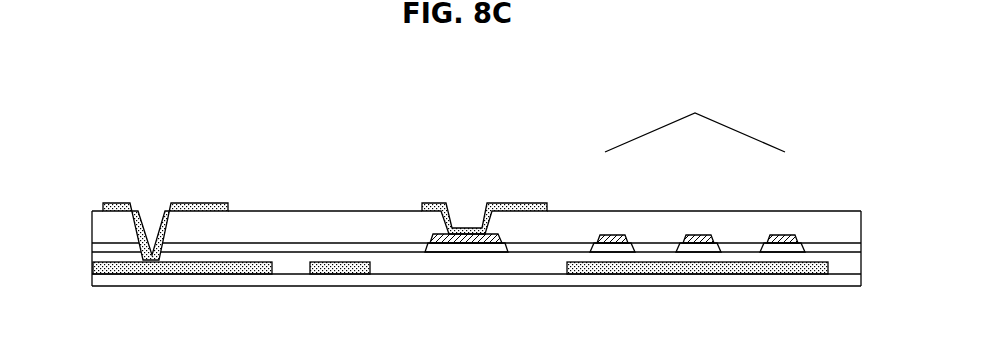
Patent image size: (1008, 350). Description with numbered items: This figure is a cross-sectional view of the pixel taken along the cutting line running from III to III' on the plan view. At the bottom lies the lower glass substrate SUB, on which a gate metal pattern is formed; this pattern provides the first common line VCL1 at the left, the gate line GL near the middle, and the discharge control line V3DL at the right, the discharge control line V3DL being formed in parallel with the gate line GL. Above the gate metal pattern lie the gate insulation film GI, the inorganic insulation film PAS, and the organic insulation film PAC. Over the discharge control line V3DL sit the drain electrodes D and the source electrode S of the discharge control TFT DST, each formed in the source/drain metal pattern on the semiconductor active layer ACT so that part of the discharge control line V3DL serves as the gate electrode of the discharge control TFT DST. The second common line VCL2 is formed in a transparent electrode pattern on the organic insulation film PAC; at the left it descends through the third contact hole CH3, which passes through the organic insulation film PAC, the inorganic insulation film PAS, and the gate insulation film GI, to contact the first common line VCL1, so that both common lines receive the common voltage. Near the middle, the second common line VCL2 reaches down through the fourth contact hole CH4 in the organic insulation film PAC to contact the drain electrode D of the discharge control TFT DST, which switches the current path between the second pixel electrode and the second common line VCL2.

The organic insulation film PAC is at (92, 220).
The inorganic insulation film PAS is at (92, 243).
The gate insulation film GI is at (92, 252).
The lower glass substrate SUB is at (92, 280).
The first common line VCL1 is at (206, 274).
The gate line GL is at (343, 274).
The discharge control line V3DL is at (693, 274).
The second common line VCL2 is at (210, 203).
The third contact hole CH3 is at (152, 200).
The fourth contact hole CH4 is at (467, 204).
The drain electrode D is at (612, 235).
The source electrode S is at (698, 235).
The semiconductor active layer ACT is at (488, 252).
The discharge control TFT DST is at (695, 123).
The section line III is at (91, 297).
The section line III' is at (862, 300).